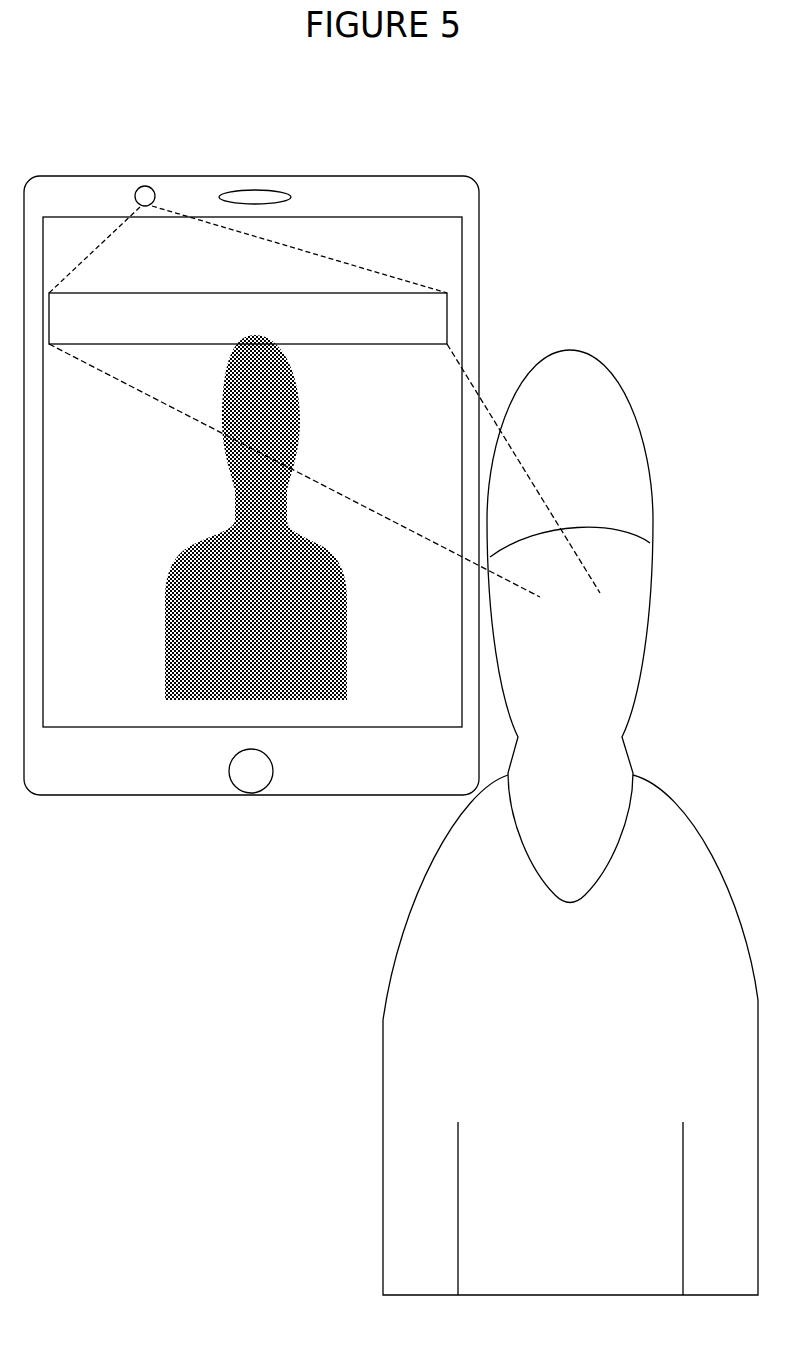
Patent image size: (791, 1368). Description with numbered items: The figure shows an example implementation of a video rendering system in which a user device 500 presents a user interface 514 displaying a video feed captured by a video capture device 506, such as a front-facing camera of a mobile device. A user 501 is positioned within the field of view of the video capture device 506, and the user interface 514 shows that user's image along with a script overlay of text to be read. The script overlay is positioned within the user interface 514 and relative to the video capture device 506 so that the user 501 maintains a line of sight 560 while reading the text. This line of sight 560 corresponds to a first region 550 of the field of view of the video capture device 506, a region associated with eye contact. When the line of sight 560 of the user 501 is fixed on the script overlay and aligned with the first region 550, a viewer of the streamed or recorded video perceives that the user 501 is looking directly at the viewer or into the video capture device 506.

The user device 500 is at (381, 157).
The video capture device 506 is at (149, 177).
The user interface 514 is at (440, 207).
The first region 550 is at (303, 244).
The line of sight 560 is at (451, 313).
The user 501 is at (638, 384).